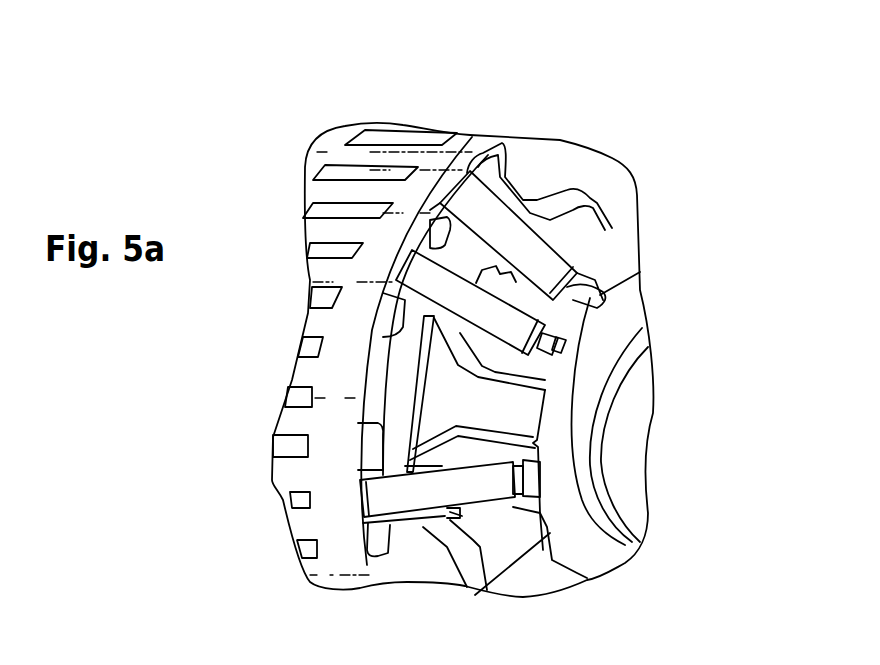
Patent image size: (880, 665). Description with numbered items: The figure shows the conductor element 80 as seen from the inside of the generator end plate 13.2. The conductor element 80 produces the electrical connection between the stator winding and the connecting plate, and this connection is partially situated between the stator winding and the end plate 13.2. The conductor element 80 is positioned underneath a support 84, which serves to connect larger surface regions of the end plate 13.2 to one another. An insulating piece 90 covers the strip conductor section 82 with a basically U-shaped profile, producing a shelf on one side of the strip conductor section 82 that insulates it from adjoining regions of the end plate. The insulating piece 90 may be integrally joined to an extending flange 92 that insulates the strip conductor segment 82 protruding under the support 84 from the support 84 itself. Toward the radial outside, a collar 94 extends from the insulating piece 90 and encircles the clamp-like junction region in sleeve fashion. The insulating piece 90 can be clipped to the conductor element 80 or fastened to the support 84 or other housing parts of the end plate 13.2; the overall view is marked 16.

The brush holder unit 16 is at (412, 112).
The end plate 13.2 is at (603, 175).
The support 84 is at (528, 140).
The conductor element 80 is at (537, 265).
The strip conductor section 82 is at (463, 383).
The insulating piece 90 is at (400, 375).
The collar 94 is at (388, 540).
The extending flange 92 is at (465, 517).